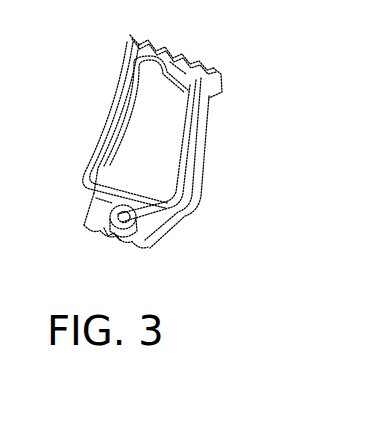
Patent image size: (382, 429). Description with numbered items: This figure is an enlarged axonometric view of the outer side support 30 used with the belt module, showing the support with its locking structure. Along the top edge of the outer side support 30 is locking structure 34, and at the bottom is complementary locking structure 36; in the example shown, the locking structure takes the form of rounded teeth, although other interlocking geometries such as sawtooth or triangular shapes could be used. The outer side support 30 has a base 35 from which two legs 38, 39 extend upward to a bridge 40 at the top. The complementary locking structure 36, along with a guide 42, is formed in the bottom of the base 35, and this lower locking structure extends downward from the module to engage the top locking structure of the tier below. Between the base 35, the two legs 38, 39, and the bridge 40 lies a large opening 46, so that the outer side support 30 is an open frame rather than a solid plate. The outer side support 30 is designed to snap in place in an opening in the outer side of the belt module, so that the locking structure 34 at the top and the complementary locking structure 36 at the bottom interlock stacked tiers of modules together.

The outer side support 30 is at (236, 46).
The locking structure 34 is at (163, 46).
The base 35 is at (96, 215).
The complementary locking structure 36 is at (115, 229).
The leg 38 is at (128, 101).
The leg 39 is at (192, 141).
The bridge 40 is at (165, 67).
The guide 42 is at (143, 238).
The opening 46 is at (144, 103).